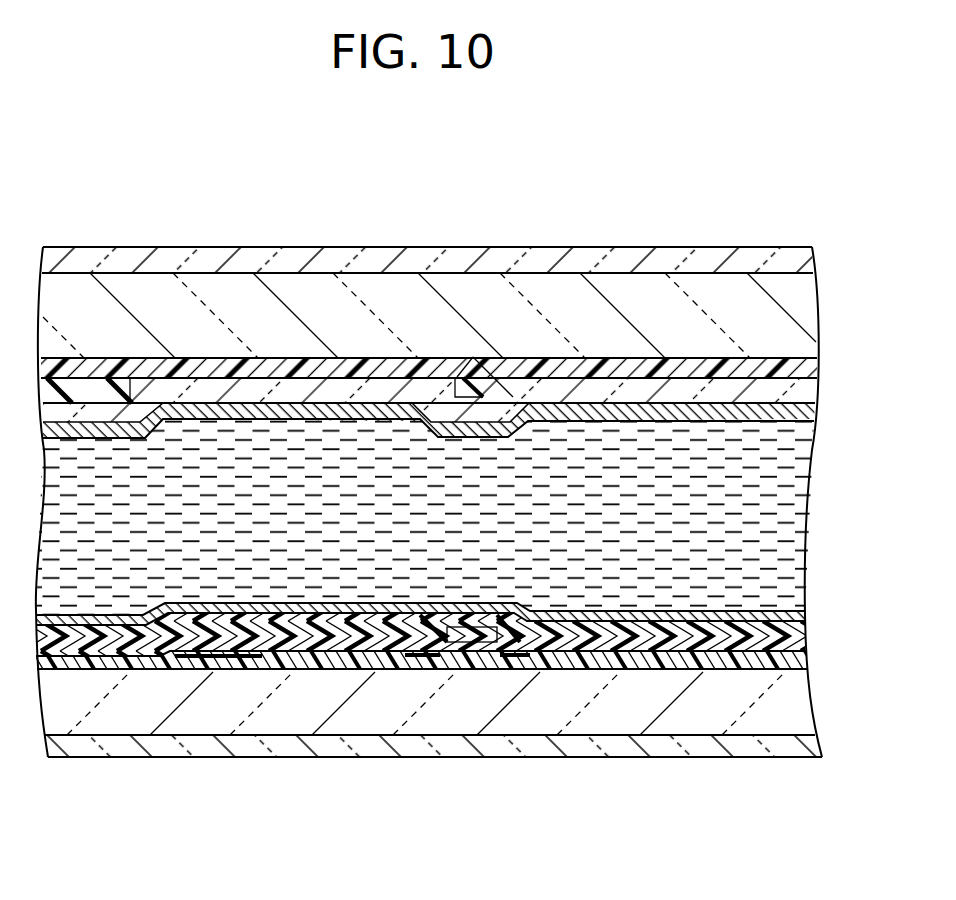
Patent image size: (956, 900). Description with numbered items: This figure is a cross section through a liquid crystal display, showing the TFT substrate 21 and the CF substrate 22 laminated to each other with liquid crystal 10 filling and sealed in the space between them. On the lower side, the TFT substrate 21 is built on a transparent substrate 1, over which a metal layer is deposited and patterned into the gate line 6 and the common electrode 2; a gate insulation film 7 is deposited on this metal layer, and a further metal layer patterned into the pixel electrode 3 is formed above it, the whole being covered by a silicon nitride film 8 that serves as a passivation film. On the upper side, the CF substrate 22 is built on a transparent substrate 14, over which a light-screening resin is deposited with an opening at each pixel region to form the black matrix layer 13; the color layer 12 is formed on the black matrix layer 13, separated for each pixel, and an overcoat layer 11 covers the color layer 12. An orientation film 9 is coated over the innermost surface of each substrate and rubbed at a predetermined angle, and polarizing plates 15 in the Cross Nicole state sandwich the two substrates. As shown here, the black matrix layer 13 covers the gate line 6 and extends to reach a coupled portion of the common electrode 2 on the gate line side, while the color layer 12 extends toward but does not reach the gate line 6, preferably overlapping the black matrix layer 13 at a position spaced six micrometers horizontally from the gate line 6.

The transparent substrate 1 is at (747, 742).
The common electrode 2 is at (497, 660).
The pixel electrode 3 is at (458, 637).
The gate line 6 is at (252, 665).
The gate insulation film 7 is at (595, 660).
The silicon nitride film 8 is at (657, 643).
The orientation film 9 is at (763, 410).
The liquid crystal 10 is at (668, 430).
The overcoat layer 11 is at (565, 387).
The color layer 12 is at (92, 392).
The black matrix layer 13 is at (370, 367).
The transparent substrate 14 is at (143, 290).
The polarizing plate 15 is at (250, 247).
The TFT substrate 21 is at (815, 768).
The CF substrate 22 is at (790, 222).